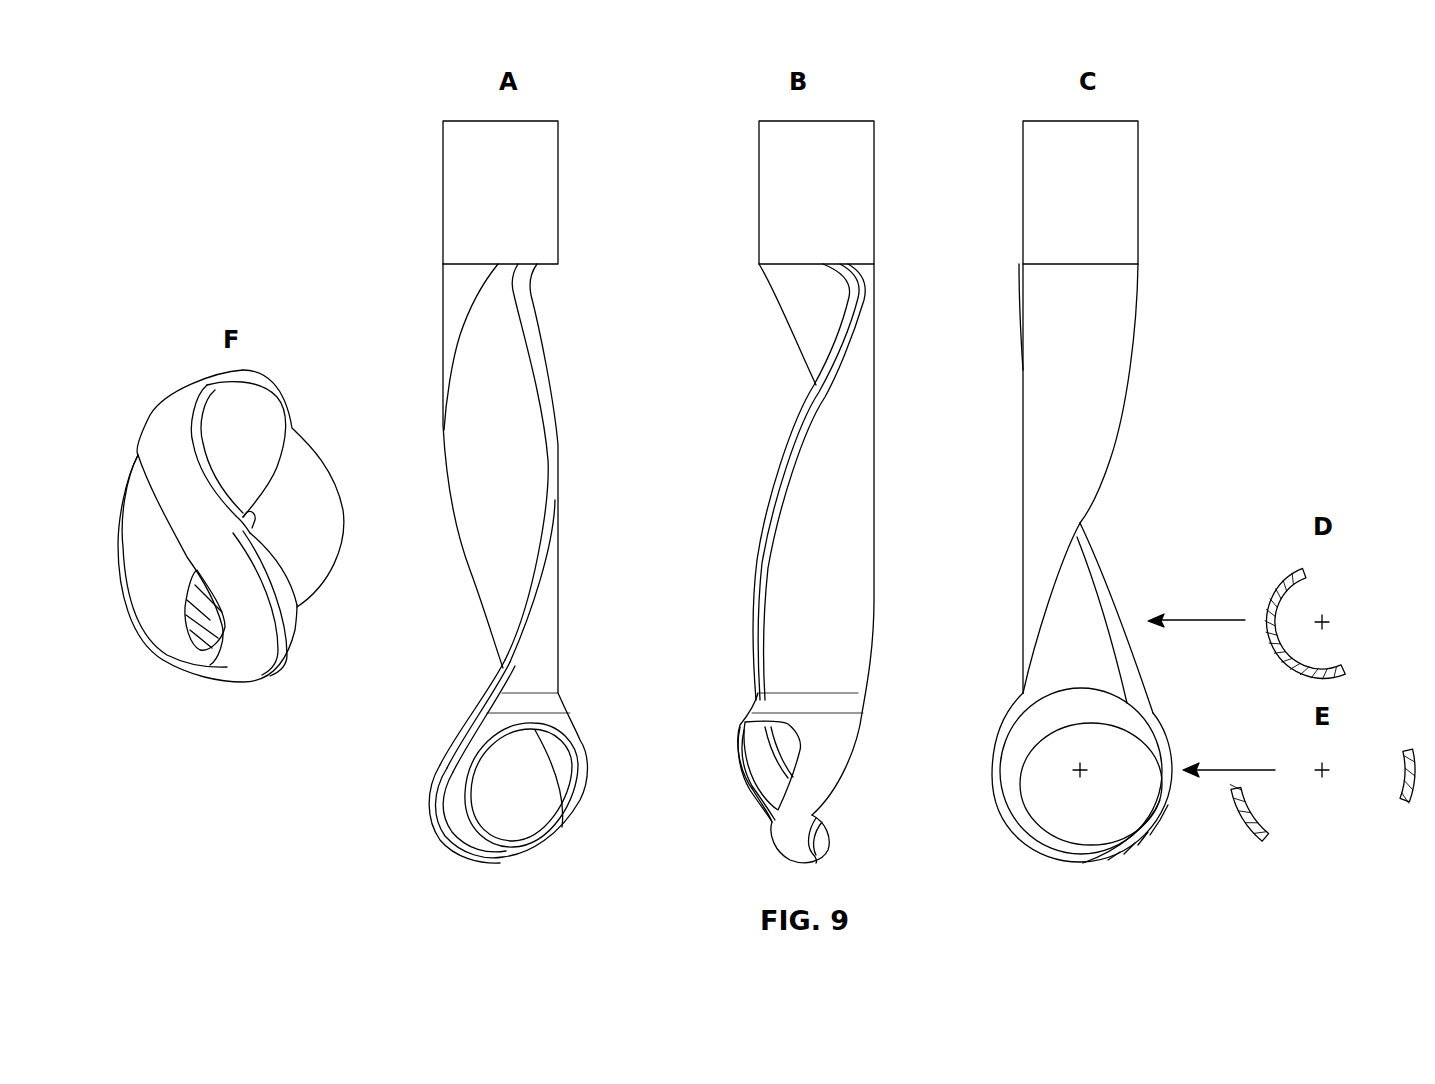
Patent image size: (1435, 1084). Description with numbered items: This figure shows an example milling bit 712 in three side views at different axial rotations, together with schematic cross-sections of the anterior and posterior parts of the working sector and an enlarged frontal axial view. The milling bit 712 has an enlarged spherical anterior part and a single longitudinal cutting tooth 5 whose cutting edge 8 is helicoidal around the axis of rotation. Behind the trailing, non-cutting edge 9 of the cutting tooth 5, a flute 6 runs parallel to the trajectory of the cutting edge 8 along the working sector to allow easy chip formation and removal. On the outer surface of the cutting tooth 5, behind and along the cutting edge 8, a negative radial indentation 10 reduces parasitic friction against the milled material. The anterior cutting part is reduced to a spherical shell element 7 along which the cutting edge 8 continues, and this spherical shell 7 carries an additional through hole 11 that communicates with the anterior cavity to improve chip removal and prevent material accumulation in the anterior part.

The milling bit 712 is at (398, 155).
The trailing edge 9 is at (443, 456).
The flute 6 is at (510, 441).
The cutting edge 8 is at (470, 722).
The spherical shell element 7 is at (455, 787).
The cutting tooth 5 is at (833, 555).
The negative radial indentation 10 is at (823, 390).
The additional through hole 11 is at (1080, 770).